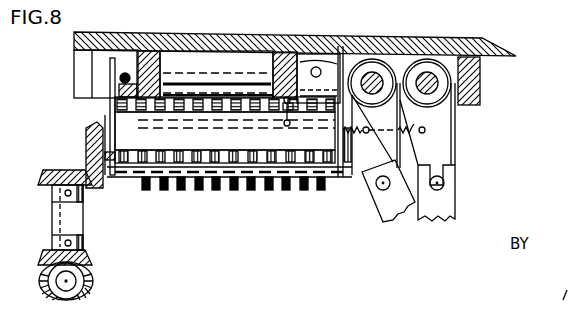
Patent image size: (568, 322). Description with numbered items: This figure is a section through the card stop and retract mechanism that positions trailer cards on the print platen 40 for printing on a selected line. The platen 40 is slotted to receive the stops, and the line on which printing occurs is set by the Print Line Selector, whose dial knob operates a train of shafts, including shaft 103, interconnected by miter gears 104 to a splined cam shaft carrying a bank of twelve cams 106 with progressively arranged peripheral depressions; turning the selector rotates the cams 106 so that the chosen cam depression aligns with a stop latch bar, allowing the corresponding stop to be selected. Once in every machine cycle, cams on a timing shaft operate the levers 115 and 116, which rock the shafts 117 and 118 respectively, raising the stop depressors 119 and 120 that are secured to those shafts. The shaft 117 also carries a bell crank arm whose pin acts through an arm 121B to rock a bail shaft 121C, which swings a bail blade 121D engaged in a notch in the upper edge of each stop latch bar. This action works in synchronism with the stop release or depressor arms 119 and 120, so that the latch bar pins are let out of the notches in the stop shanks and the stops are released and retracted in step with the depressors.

The print platen 40 is at (490, 43).
The shaft 103 is at (84, 216).
The miter gears 104 is at (88, 133).
The cams 106 is at (183, 186).
The lever 115 is at (370, 168).
The lever 116 is at (443, 186).
The shaft 117 is at (373, 78).
The shaft 118 is at (428, 76).
The stop depressor 119 is at (203, 50).
The stop depressor 120 is at (248, 72).
The arm 121B is at (341, 47).
The bail shaft 121C is at (172, 77).
The bail blade 121D is at (217, 137).